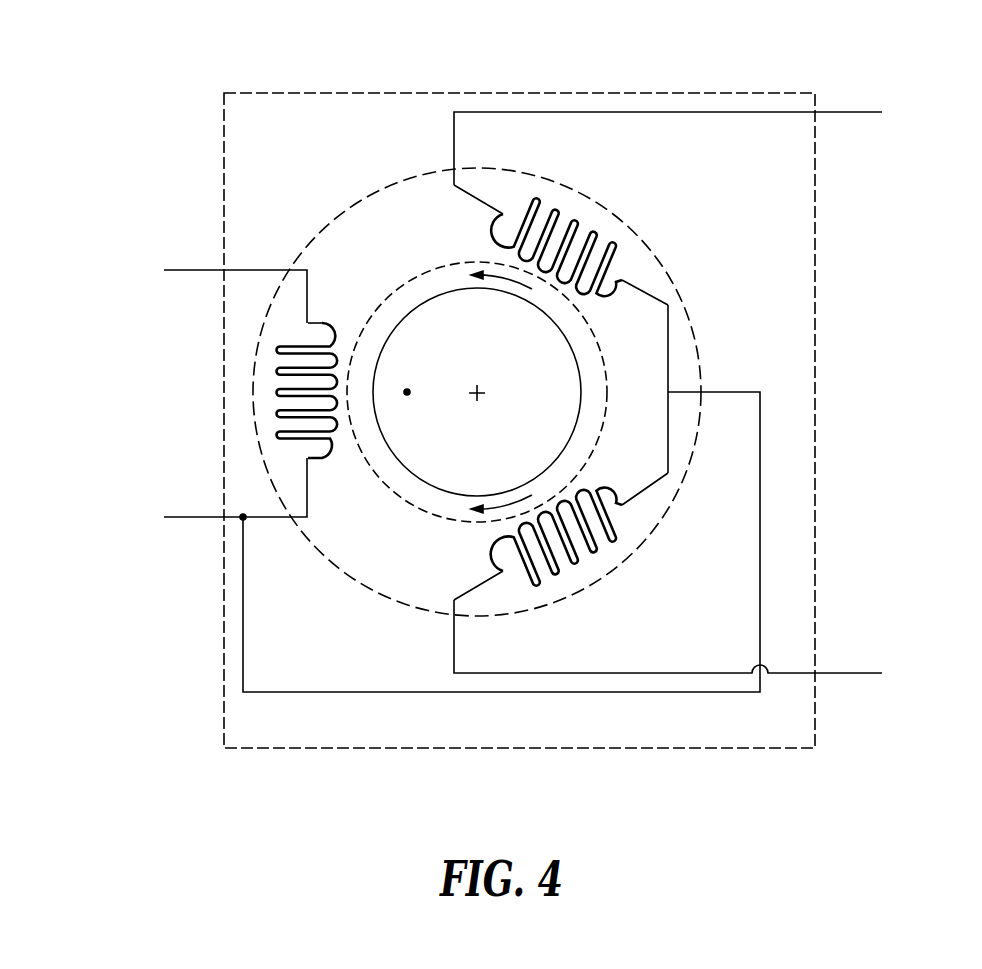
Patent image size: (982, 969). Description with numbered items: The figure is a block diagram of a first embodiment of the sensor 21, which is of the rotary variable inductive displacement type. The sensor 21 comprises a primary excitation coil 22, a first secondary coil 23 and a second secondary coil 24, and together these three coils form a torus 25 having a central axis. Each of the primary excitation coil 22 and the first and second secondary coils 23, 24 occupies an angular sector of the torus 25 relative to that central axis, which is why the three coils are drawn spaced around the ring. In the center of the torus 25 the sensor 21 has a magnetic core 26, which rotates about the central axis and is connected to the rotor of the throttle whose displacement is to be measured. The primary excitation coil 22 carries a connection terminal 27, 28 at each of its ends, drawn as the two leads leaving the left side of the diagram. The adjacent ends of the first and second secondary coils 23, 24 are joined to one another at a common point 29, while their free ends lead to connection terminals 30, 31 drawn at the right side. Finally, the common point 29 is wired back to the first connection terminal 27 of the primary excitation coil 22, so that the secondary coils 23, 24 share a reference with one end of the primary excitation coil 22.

The sensor 21 is at (868, 57).
The primary excitation coil 22 is at (255, 392).
The first secondary coil 23 is at (600, 217).
The second secondary coil 24 is at (599, 563).
The torus 25 is at (679, 266).
The magnetic core 26 is at (447, 333).
The connection terminal 27 is at (152, 517).
The connection terminal 28 is at (152, 270).
The common point 29 is at (679, 387).
The connection terminal 30 is at (894, 112).
The connection terminal 31 is at (894, 673).